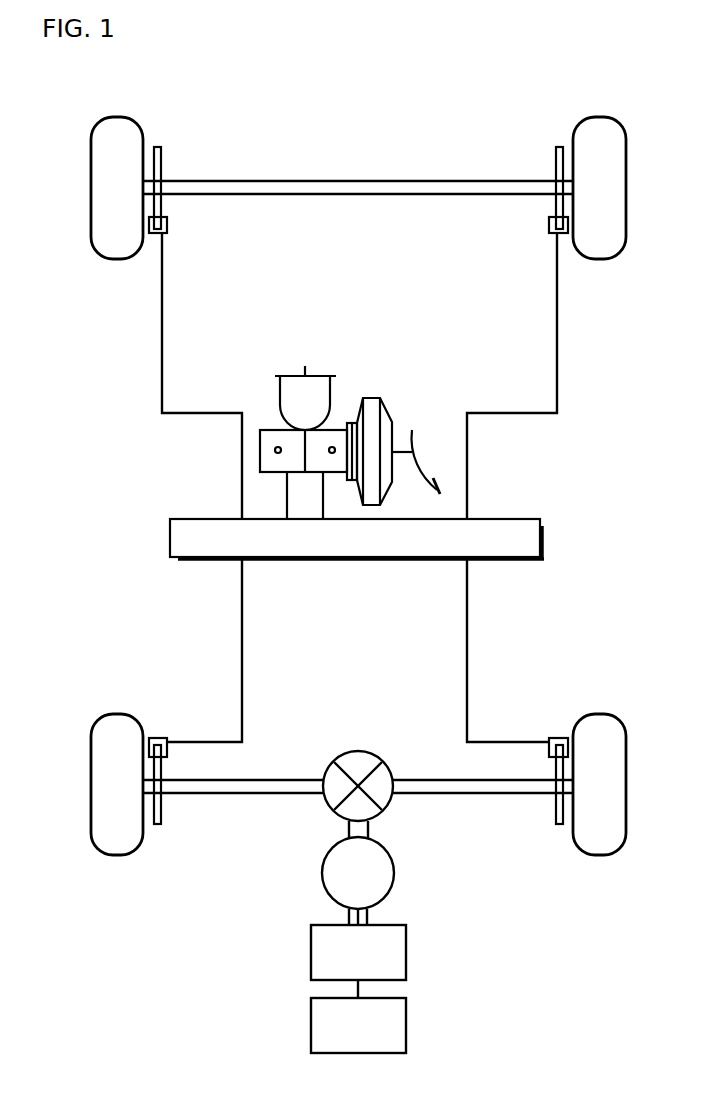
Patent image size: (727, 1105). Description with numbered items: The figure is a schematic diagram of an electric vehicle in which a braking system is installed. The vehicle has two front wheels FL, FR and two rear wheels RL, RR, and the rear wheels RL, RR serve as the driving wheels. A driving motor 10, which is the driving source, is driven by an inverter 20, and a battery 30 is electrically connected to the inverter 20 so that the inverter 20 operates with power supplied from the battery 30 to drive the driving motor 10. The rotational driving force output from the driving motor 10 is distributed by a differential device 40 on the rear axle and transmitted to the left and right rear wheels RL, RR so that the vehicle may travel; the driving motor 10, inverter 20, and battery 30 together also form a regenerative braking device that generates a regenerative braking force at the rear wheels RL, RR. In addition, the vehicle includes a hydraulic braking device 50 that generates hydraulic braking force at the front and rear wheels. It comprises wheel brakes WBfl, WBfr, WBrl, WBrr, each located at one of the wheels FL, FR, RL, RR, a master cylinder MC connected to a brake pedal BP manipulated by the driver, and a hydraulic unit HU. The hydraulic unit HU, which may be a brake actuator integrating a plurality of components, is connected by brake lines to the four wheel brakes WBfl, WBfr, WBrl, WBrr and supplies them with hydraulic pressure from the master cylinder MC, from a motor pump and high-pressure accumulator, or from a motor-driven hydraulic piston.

The driving motor 10 is at (391, 851).
The inverter 20 is at (406, 925).
The battery 30 is at (406, 998).
The differential device 40 is at (378, 755).
The hydraulic braking device 50 is at (478, 506).
The hydraulic unit HU is at (357, 539).
The master cylinder MC is at (269, 429).
The brake pedal BP is at (413, 431).
The wheel brake WBfl is at (163, 153).
The wheel brake WBfr is at (554, 153).
The wheel brake WBrl is at (161, 826).
The wheel brake WBrr is at (558, 826).
The front wheel FL is at (117, 188).
The front wheel FR is at (599, 188).
The rear wheel RL is at (117, 784).
The rear wheel RR is at (599, 784).